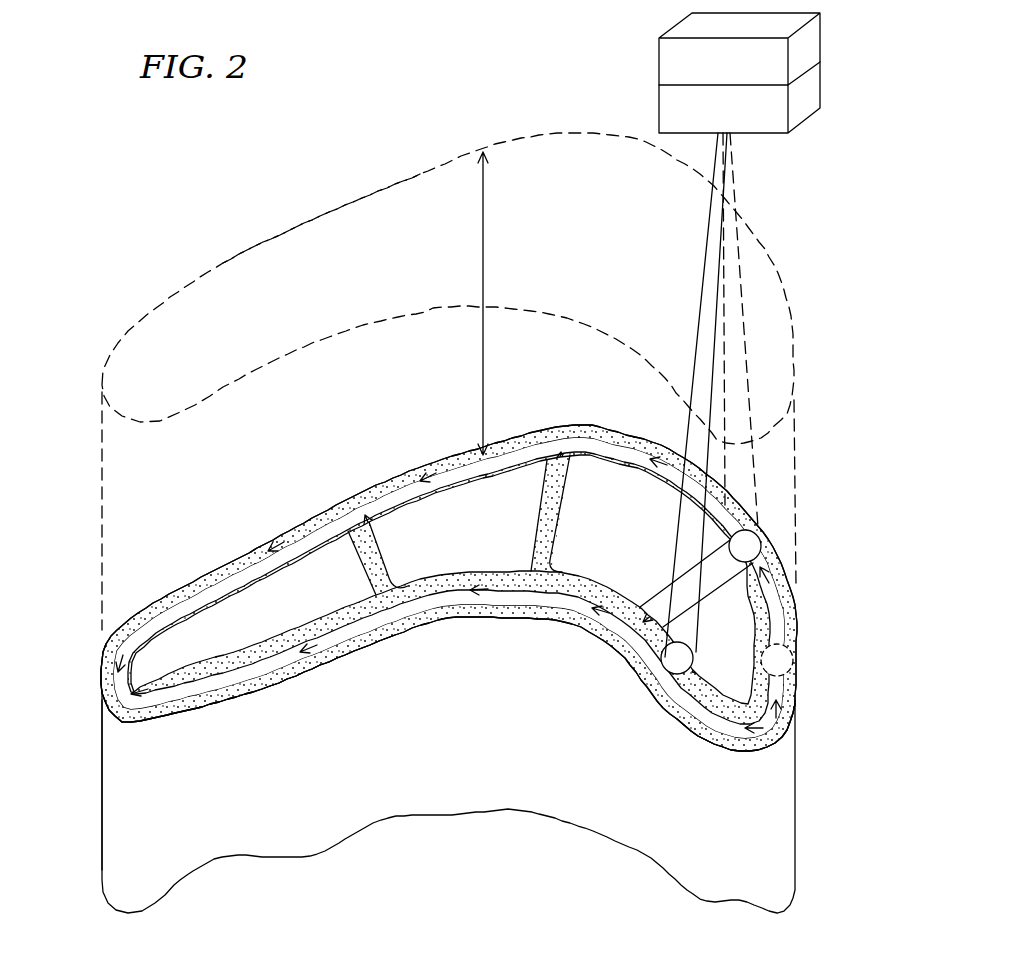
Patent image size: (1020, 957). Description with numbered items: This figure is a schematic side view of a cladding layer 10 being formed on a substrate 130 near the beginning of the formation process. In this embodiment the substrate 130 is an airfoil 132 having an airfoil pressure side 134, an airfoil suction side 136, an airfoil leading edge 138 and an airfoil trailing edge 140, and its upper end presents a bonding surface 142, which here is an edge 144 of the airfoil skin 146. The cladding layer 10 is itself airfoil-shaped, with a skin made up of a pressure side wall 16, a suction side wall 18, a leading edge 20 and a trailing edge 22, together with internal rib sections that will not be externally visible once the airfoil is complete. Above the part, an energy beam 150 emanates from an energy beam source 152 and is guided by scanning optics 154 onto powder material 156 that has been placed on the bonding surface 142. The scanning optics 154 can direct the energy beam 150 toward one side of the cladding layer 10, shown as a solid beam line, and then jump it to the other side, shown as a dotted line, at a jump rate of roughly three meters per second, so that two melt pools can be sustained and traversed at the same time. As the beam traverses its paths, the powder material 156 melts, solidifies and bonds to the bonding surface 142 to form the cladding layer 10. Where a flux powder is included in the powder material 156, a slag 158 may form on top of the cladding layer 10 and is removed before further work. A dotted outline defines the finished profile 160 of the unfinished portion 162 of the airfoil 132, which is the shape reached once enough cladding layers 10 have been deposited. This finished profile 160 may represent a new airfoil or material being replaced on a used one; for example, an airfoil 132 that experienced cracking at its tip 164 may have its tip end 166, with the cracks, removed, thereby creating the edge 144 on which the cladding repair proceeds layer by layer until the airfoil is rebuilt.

The cladding layer 10 is at (633, 652).
The pressure side wall 16 is at (505, 612).
The suction side wall 18 is at (255, 543).
The leading edge 20 is at (728, 753).
The trailing edge 22 is at (101, 672).
The substrate 130 is at (449, 588).
The airfoil 132 is at (449, 588).
The airfoil pressure side 134 is at (514, 750).
The airfoil suction side 136 is at (348, 498).
The airfoil leading edge 138 is at (758, 752).
The airfoil trailing edge 140 is at (102, 778).
The bonding surface 142 is at (449, 588).
The edge 144 is at (317, 653).
The airfoil skin 146 is at (280, 797).
The energy beam 150 is at (702, 303).
The energy beam source 152 is at (746, 72).
The scanning optics 154 is at (746, 118).
The powder material 156 is at (227, 688).
The slag 158 is at (783, 600).
The finished profile 160 is at (102, 484).
The unfinished portion 162 is at (331, 297).
The tip 164 is at (282, 236).
The tip end 166 is at (481, 250).